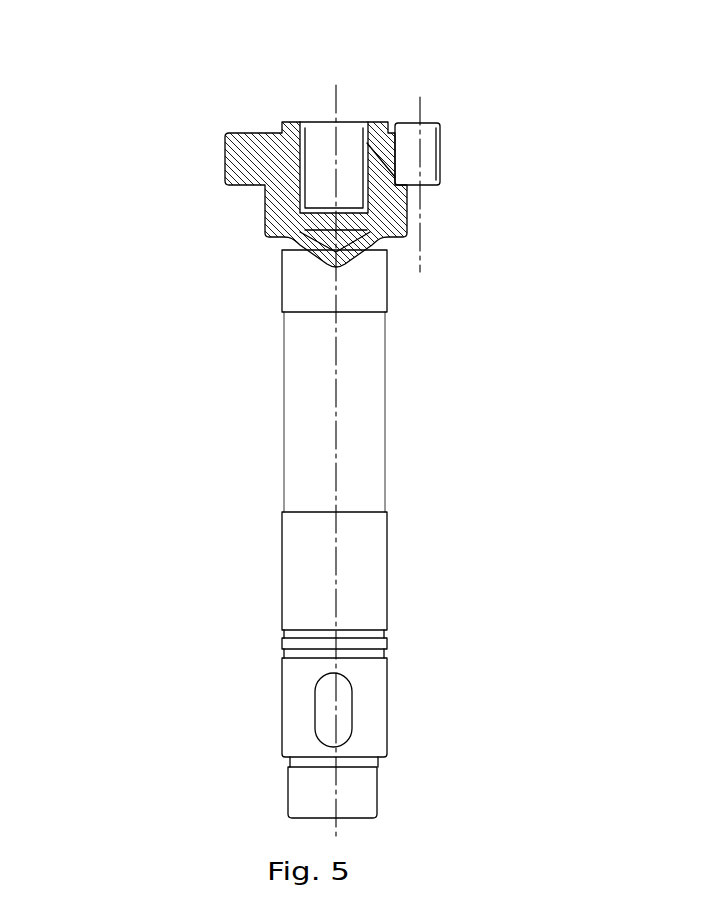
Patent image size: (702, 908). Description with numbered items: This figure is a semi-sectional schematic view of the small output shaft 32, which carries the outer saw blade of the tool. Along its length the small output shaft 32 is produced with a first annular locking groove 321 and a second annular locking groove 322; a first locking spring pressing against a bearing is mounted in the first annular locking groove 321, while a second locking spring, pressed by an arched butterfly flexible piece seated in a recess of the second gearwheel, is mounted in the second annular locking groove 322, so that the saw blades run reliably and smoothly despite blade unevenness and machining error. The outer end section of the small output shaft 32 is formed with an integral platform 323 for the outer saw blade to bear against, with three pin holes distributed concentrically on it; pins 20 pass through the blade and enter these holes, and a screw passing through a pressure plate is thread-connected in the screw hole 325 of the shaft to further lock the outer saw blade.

The pin 20 is at (428, 140).
The small output shaft 32 is at (337, 534).
The first annular locking groove 321 is at (388, 635).
The second annular locking groove 322 is at (282, 654).
The platform 323 is at (311, 149).
The screw hole 325 is at (318, 143).